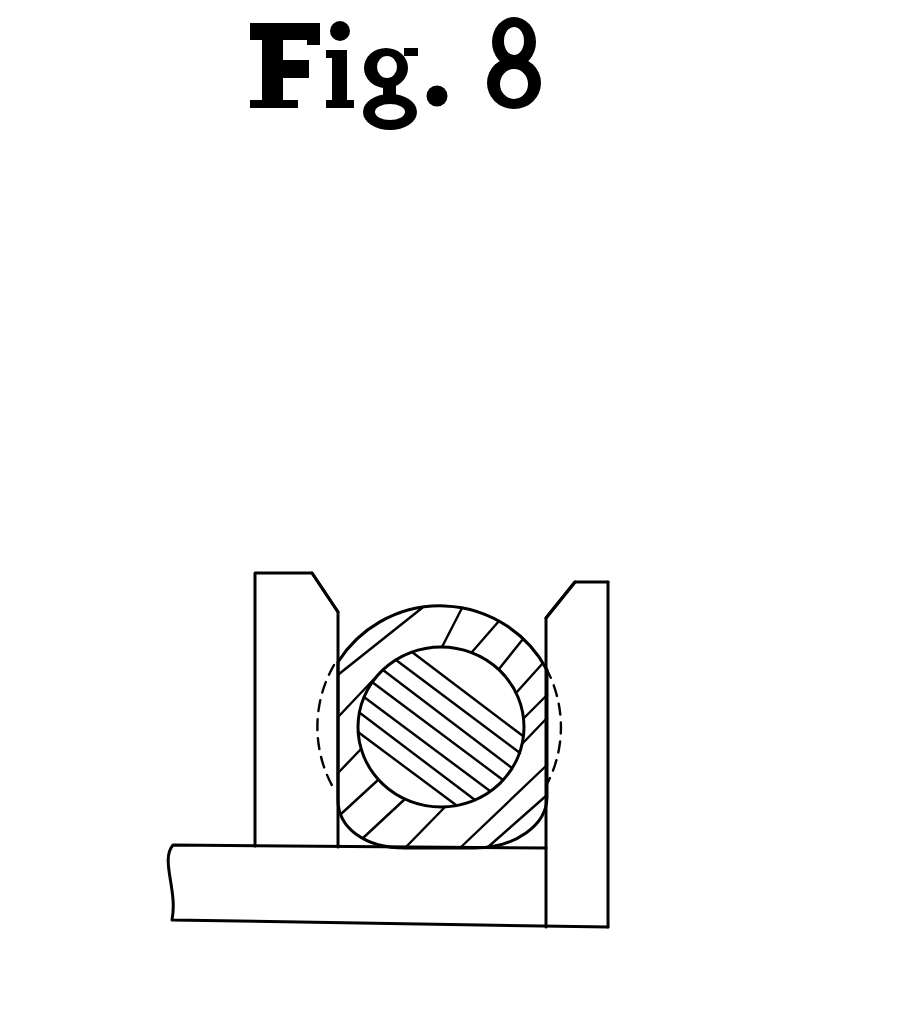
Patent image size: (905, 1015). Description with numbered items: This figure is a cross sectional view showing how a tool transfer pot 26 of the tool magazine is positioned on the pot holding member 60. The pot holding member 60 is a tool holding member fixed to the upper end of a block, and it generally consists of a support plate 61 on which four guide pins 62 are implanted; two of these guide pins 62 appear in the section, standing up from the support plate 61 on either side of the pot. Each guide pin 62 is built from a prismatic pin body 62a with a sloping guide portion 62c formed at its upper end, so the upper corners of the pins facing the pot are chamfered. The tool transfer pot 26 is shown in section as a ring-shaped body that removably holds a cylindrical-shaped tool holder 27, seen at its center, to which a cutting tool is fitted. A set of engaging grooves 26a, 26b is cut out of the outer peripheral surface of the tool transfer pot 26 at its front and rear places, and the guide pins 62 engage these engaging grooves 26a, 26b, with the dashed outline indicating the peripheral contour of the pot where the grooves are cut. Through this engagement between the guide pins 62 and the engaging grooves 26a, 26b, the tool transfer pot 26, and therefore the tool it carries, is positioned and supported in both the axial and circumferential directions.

The tool transfer pot 26 is at (433, 695).
The engaging groove 26a is at (615, 710).
The engaging groove 26b is at (327, 714).
The tool holder 27 is at (392, 722).
The pot holding member 60 is at (417, 668).
The support plate 61 is at (198, 845).
The guide pin 62 is at (467, 668).
The prismatic pin body 62a is at (608, 852).
The sloping guide portion 62c is at (325, 588).